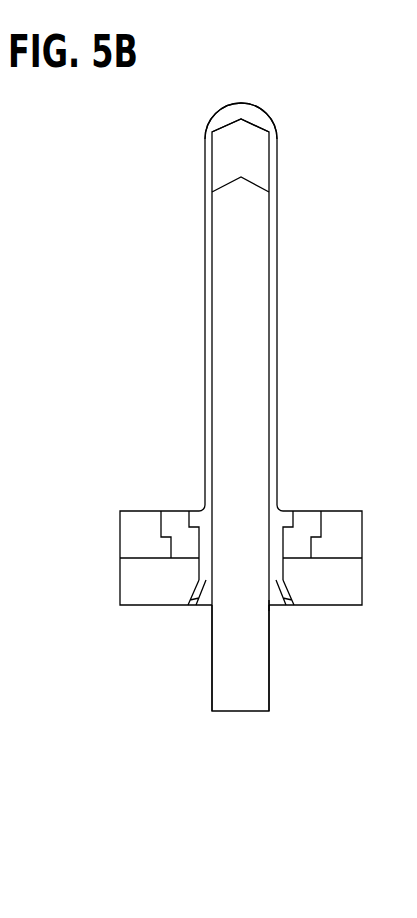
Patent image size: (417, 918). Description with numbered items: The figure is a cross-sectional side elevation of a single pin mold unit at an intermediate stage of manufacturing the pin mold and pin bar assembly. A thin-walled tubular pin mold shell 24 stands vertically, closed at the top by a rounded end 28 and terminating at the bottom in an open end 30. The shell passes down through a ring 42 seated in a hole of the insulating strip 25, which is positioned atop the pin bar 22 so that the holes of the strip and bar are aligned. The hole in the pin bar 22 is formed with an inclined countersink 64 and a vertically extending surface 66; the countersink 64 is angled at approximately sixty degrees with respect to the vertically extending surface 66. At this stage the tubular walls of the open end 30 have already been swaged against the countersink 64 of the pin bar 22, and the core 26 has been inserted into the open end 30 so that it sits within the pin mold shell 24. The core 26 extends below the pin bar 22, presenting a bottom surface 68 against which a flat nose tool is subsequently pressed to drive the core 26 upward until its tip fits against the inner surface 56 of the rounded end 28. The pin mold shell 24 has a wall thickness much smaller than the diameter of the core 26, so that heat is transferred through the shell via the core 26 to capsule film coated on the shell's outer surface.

The pin bar 22 is at (345, 582).
The pin mold shell 24 is at (276, 297).
The insulating strip 25 is at (350, 523).
The core 26 is at (258, 423).
The rounded end 28 is at (271, 113).
The open end 30 is at (270, 606).
The ring 42 is at (307, 520).
The inner surface 56 is at (230, 125).
The countersink 64 is at (282, 594).
The vertically extending surface 66 is at (210, 567).
The bottom surface 68 is at (232, 712).